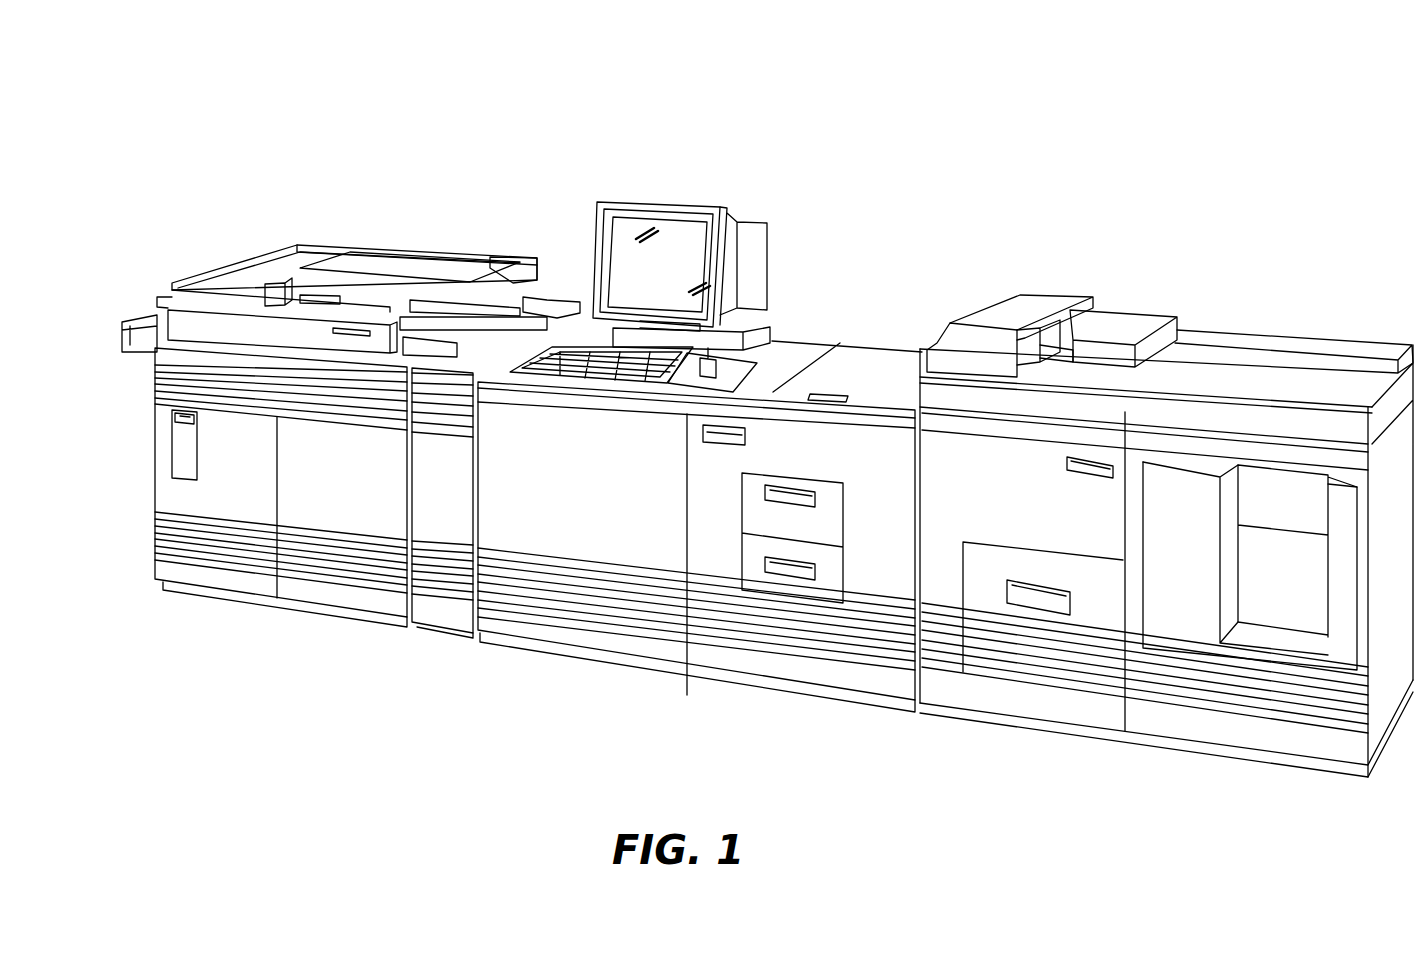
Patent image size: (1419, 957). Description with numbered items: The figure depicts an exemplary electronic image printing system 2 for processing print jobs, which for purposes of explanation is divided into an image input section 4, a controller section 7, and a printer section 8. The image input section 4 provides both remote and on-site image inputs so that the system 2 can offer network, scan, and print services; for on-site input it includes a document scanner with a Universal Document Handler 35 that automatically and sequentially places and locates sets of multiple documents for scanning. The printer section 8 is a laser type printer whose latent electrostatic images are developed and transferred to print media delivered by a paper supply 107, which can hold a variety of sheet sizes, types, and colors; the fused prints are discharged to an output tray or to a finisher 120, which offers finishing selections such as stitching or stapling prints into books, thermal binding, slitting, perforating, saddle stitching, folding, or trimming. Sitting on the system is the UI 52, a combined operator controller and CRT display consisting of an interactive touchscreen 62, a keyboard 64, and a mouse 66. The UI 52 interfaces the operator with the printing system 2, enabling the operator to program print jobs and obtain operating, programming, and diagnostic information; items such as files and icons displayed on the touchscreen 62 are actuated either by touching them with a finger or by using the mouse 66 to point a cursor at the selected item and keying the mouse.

The image printing system 2 is at (857, 112).
The image input section 4 is at (395, 232).
The controller section 7 is at (150, 495).
The printer section 8 is at (882, 273).
The Universal Document Handler 35 is at (267, 268).
The UI 52 is at (690, 192).
The interactive touchscreen 62 is at (625, 270).
The keyboard 64 is at (577, 385).
The mouse 66 is at (678, 388).
The paper supply 107 is at (990, 588).
The finisher 120 is at (1207, 728).